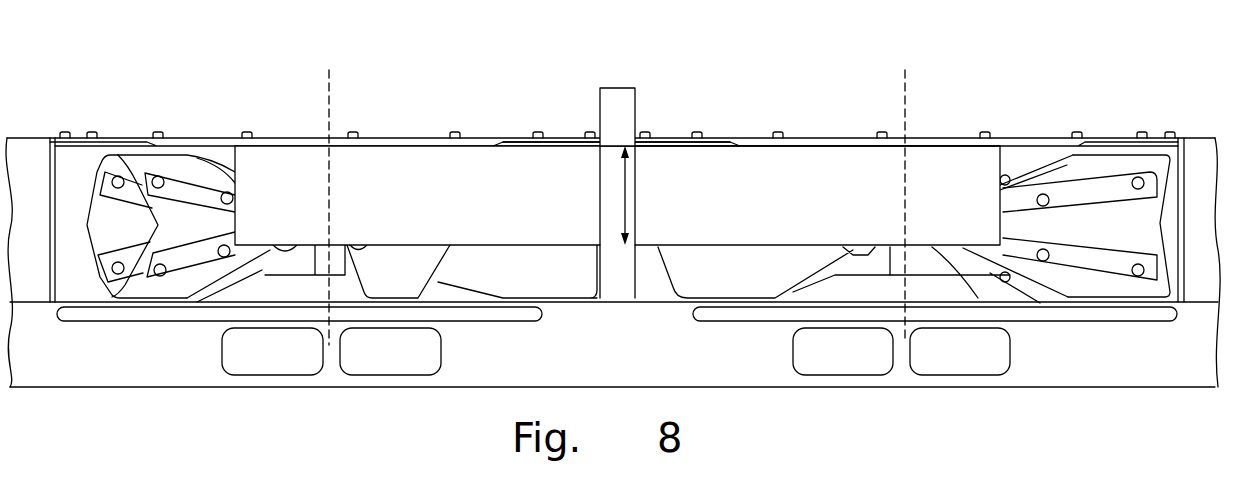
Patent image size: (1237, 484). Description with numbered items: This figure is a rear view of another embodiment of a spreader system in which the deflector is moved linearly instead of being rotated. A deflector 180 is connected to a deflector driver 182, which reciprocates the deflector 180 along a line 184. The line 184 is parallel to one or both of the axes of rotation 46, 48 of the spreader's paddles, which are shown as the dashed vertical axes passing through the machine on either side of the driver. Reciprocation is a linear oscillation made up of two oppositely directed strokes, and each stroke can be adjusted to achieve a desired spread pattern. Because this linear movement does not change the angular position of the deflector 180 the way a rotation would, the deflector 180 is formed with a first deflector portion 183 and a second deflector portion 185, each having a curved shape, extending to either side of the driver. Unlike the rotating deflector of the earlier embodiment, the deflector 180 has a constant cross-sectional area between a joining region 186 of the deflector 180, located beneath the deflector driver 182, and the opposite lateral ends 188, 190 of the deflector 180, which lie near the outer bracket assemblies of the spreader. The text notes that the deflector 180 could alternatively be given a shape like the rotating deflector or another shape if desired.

The axis of rotation 46 is at (328, 103).
The axis of rotation 48 is at (906, 96).
The deflector 180 is at (762, 138).
The deflector driver 182 is at (636, 102).
The first deflector portion 183 is at (392, 180).
The line 184 is at (626, 195).
The second deflector portion 185 is at (805, 187).
The joining region 186 is at (632, 177).
The lateral end 188 is at (236, 176).
The lateral end 190 is at (1017, 153).